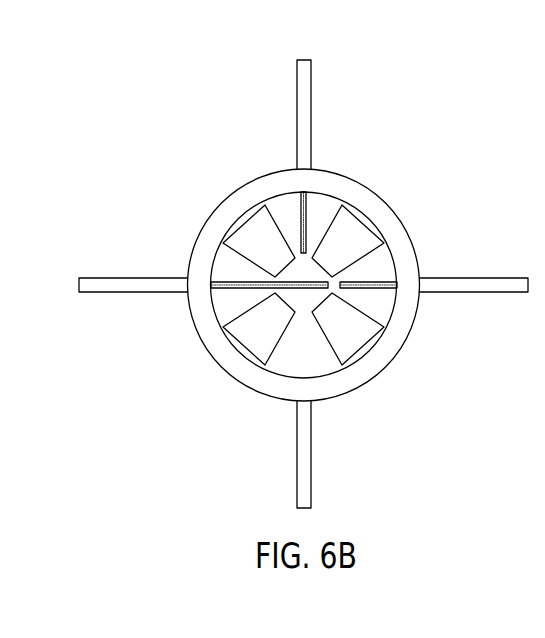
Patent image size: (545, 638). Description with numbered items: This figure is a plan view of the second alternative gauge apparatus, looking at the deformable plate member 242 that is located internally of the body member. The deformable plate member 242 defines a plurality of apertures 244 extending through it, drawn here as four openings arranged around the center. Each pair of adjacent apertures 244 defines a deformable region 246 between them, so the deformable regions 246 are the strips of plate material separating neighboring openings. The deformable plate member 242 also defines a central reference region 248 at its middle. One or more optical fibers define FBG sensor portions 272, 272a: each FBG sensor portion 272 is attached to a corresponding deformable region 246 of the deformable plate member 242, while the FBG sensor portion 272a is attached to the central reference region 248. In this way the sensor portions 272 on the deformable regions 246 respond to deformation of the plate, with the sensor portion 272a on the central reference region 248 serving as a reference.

The deformable plate member 242 is at (326, 372).
The apertures 244 is at (353, 327).
The deformable region 246 is at (220, 307).
The central reference region 248 is at (307, 270).
The FBG sensor portion 272 is at (301, 206).
The FBG sensor portion 272a is at (298, 282).